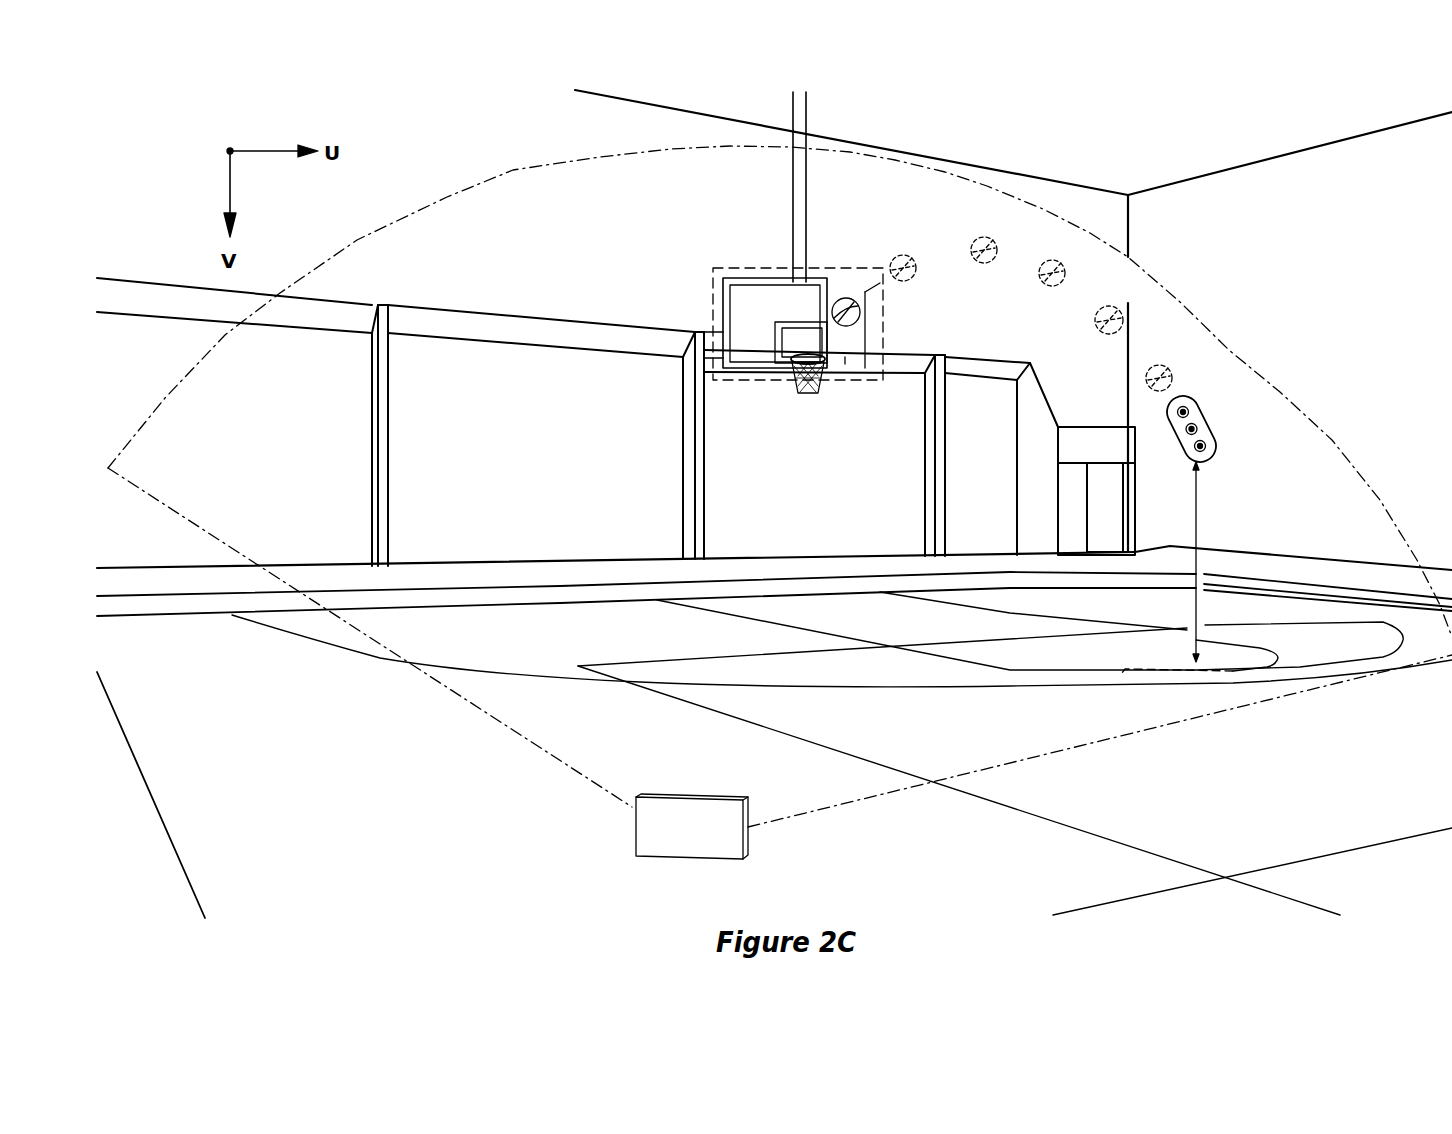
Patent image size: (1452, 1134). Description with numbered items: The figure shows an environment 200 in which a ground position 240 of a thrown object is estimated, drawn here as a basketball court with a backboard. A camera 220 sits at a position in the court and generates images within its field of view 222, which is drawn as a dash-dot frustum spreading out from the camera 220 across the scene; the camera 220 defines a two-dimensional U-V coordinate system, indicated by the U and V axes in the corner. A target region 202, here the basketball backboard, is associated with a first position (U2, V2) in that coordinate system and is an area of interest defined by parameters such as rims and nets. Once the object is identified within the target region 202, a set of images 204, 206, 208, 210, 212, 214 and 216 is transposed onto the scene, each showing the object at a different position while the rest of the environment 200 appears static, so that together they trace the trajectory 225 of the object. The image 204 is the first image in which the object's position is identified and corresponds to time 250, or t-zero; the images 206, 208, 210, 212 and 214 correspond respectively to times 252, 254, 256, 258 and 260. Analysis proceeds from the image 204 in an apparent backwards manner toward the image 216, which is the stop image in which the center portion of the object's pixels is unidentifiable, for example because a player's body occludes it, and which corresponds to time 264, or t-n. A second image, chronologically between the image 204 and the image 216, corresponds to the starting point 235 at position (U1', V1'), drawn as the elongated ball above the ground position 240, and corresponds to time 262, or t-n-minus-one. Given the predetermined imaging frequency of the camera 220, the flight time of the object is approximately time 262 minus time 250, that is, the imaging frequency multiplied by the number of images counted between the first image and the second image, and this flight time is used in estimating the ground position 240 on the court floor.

The environment 200 is at (438, 902).
The target region 202 is at (713, 330).
The image 204 is at (843, 288).
The image 206 is at (903, 244).
The image 208 is at (981, 227).
The image 210 is at (1050, 250).
The image 212 is at (1108, 297).
The image 214 is at (1157, 354).
The image 216 is at (1233, 559).
The camera 220 is at (706, 850).
The field of view 222 is at (1197, 721).
The trajectory 225 is at (1098, 308).
The starting point 235 is at (1199, 410).
The ground position 240 is at (1262, 673).
The image time 250 is at (842, 381).
The image time 252 is at (900, 338).
The image time 254 is at (981, 305).
The image time 256 is at (1040, 334).
The image time 258 is at (1115, 382).
The image time 260 is at (1158, 447).
The image time 262 is at (1280, 374).
The image time 264 is at (1275, 514).